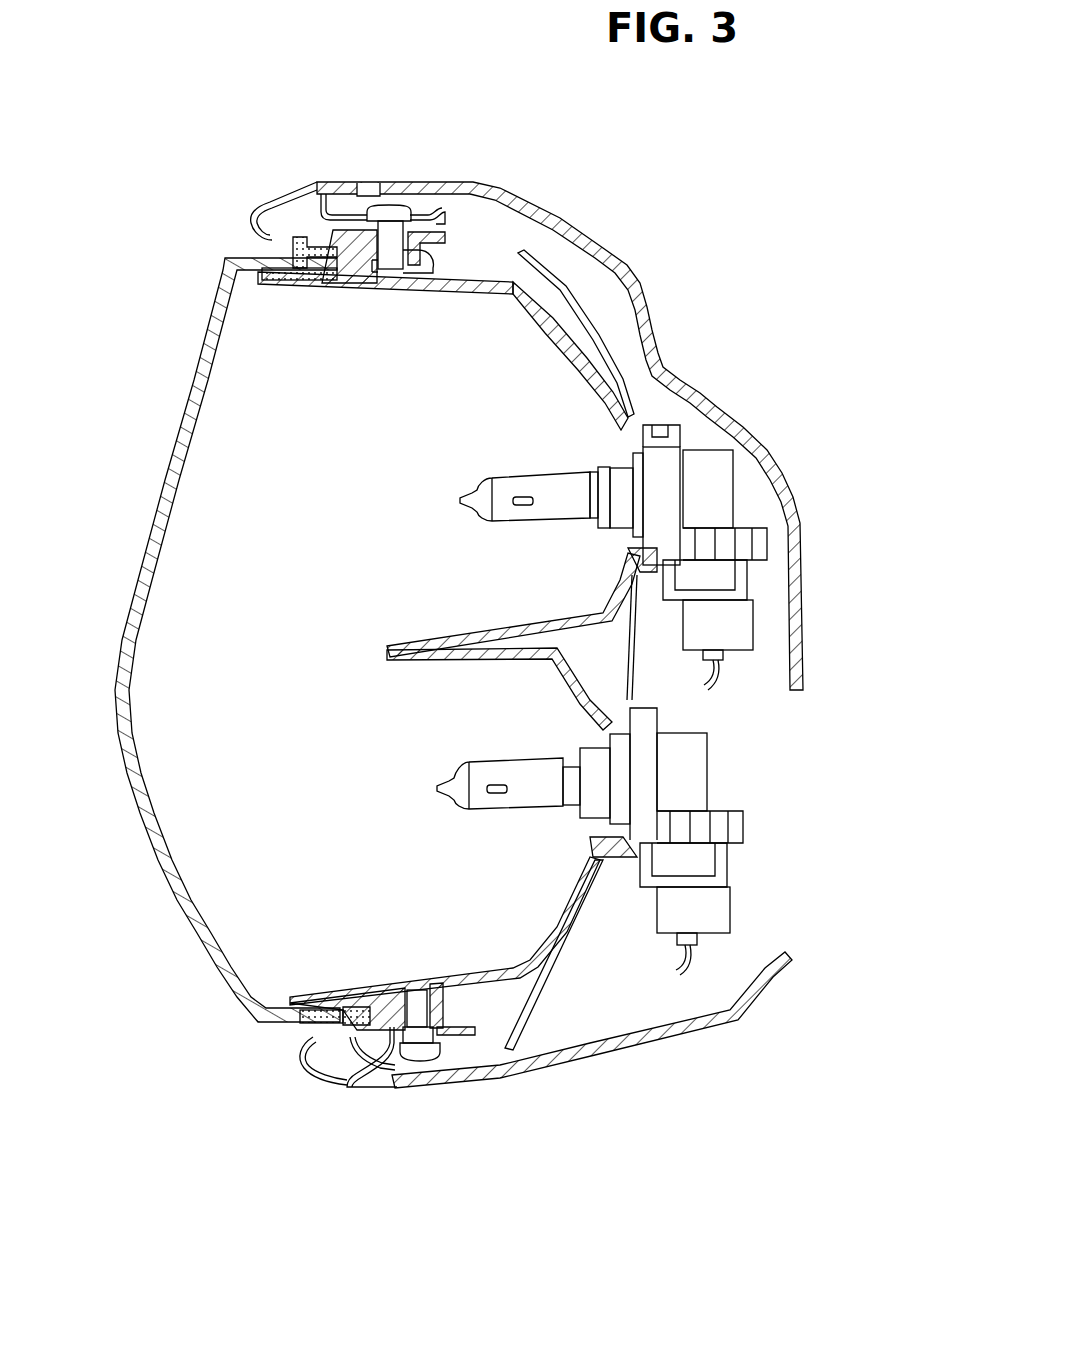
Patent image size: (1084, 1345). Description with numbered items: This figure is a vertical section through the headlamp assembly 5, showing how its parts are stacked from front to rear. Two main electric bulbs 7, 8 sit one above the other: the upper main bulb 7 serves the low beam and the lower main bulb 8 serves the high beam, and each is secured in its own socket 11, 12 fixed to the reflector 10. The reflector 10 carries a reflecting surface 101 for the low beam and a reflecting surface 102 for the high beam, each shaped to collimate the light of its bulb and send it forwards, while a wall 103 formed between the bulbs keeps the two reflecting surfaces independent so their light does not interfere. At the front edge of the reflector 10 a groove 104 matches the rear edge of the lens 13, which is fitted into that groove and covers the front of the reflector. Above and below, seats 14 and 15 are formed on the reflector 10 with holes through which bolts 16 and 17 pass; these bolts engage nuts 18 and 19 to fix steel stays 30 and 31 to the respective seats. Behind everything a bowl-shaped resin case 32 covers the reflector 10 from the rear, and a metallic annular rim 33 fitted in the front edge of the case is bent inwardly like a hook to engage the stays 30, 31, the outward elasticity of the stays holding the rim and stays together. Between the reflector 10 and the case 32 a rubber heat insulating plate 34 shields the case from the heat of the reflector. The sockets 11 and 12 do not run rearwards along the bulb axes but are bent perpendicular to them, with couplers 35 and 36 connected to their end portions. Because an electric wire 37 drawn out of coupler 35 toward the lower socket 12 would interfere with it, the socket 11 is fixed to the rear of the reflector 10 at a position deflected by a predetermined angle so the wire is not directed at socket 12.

The headlamp assembly 5 is at (168, 898).
The main electric bulb 7 is at (512, 476).
The main electric bulb 8 is at (486, 752).
The reflector 10 is at (478, 270).
The socket 11 is at (705, 480).
The socket 12 is at (685, 755).
The lens 13 is at (122, 612).
The seat 14 is at (445, 226).
The seat 15 is at (478, 1088).
The bolt 16 is at (398, 205).
The bolt 17 is at (440, 1072).
The nut 18 is at (428, 272).
The nut 19 is at (441, 977).
The stay 30 is at (330, 182).
The stay 31 is at (382, 1087).
The case 32 is at (588, 236).
The annular rim 33 is at (255, 212).
The heat insulating plate 34 is at (530, 1017).
The coupler 35 is at (740, 630).
The coupler 36 is at (715, 905).
The electric wire 37 is at (712, 688).
The reflecting surface 101 is at (535, 318).
The reflecting surface 102 is at (547, 928).
The wall 103 is at (400, 646).
The groove 104 is at (340, 1090).